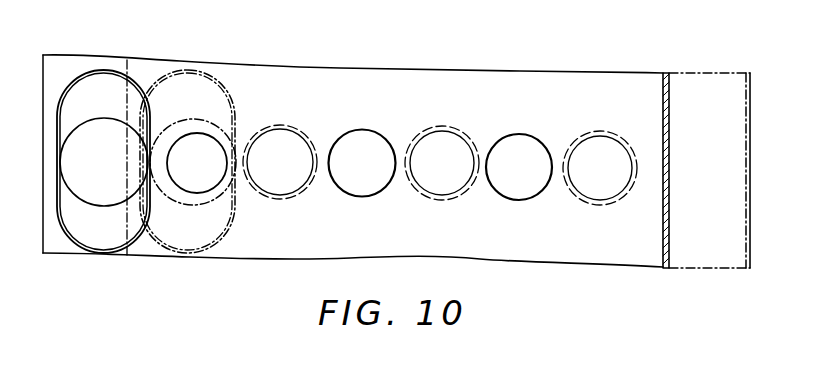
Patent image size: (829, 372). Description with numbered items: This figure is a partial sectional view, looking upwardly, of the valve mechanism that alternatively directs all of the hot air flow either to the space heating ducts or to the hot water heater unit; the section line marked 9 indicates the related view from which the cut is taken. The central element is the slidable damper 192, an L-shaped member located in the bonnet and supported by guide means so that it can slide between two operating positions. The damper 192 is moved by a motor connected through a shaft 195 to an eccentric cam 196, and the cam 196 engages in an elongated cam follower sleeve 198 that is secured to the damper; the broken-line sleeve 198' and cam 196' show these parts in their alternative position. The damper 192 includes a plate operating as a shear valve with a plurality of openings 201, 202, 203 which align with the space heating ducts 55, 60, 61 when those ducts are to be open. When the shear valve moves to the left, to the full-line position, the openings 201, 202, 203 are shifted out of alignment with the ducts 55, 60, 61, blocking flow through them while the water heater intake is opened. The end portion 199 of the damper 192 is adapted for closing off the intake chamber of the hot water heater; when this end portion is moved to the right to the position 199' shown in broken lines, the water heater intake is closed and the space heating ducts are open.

The slidable damper 192 is at (258, 248).
The elongated cam follower sleeve 198 is at (103, 138).
The eccentric cam 196 is at (104, 147).
The shaft 195 is at (148, 162).
The elongated cam follower sleeve (shifted position) 198' is at (205, 141).
The eccentric cam (shifted position) 196' is at (193, 178).
The opening 201 is at (219, 138).
The duct 61 is at (292, 200).
The opening 202 is at (372, 137).
The duct 60 is at (447, 203).
The opening 203 is at (525, 137).
The duct 55 is at (595, 208).
The end portion 199 is at (645, 156).
The end portion (shifted position) 199' is at (733, 153).
The section line 9 is at (29, 164).